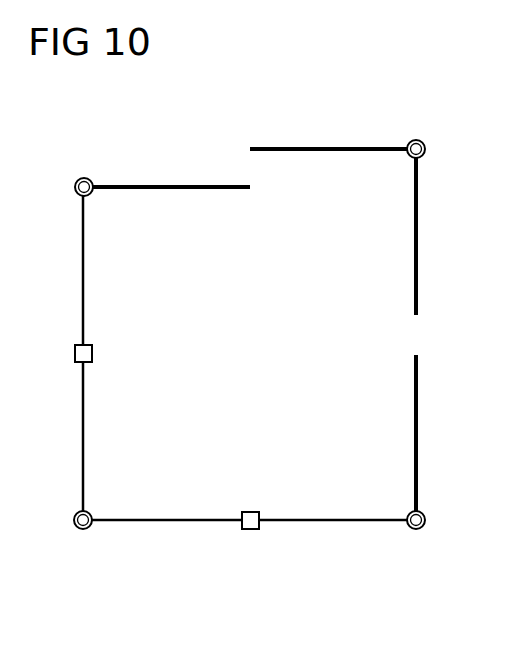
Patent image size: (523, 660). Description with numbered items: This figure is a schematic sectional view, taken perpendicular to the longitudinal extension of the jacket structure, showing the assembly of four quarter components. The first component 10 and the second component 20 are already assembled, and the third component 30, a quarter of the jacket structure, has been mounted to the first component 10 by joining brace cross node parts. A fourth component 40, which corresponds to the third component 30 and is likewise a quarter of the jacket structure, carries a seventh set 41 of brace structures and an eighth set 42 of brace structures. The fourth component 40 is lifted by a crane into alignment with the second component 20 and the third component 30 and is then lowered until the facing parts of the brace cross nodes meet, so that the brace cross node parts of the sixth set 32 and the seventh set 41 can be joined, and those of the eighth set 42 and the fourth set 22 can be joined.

The first component 10 is at (82, 548).
The second component 20 is at (415, 548).
The third component 30 is at (82, 162).
The fourth component 40 is at (414, 124).
The fourth set of brace structures 22 is at (430, 355).
The sixth set of brace structures 32 is at (93, 173).
The seventh set of brace structures 41 is at (405, 132).
The eighth set of brace structures 42 is at (430, 158).